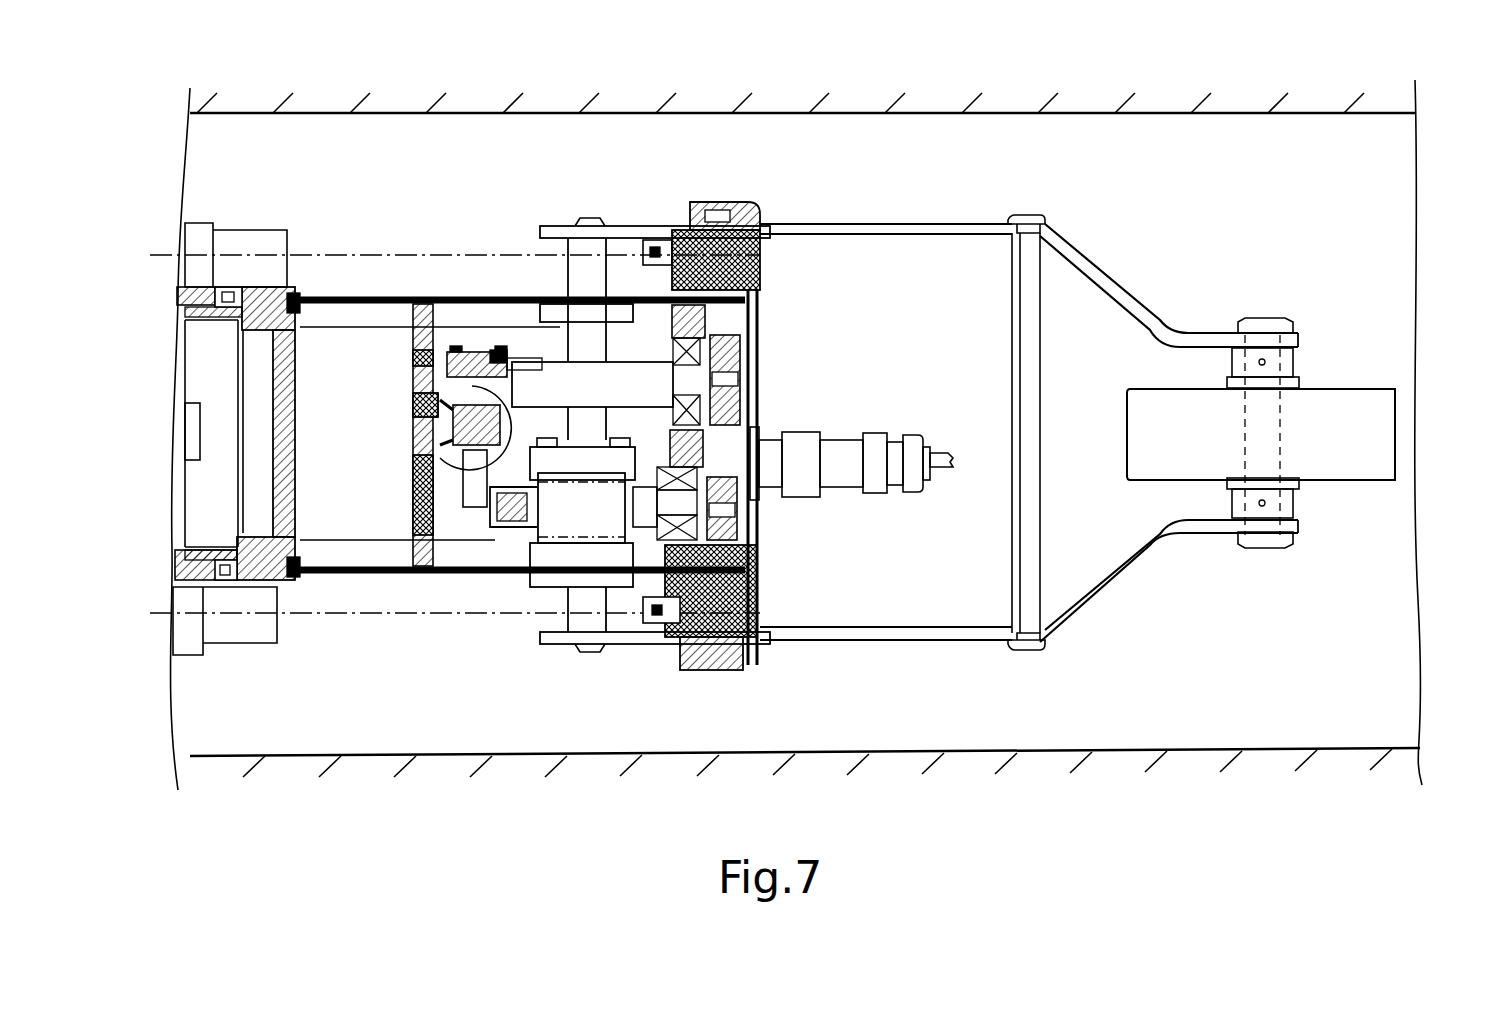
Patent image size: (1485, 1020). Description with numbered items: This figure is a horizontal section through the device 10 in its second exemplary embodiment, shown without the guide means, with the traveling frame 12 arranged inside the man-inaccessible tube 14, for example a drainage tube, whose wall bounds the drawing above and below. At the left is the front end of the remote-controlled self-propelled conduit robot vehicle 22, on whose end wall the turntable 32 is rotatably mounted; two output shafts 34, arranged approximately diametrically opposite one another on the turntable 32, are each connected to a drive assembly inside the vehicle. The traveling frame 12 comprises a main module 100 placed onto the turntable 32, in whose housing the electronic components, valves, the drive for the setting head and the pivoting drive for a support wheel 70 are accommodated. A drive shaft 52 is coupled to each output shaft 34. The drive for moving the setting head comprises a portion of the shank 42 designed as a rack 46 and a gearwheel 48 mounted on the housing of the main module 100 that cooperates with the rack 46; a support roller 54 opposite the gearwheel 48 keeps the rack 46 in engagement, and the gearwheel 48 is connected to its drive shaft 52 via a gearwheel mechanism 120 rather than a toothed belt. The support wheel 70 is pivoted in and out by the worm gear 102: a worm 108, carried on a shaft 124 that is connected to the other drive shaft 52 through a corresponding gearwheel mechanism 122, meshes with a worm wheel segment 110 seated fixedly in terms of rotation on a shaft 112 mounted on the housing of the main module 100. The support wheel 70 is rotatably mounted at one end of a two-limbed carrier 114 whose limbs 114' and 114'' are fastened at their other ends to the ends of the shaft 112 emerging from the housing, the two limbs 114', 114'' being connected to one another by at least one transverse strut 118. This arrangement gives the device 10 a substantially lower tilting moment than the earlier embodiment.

The device 10 is at (814, 182).
The traveling frame 12 is at (300, 590).
The tube 14 is at (1245, 100).
The conduit robot vehicle 22 is at (172, 208).
The turntable 32 is at (163, 660).
The output shafts 34 is at (265, 235).
The shank 42 is at (412, 407).
The rack 46 is at (452, 428).
The gearwheel 48 is at (470, 350).
The drive shaft 52 is at (377, 250).
The support roller 54 is at (412, 525).
The support wheel 70 is at (1368, 412).
The main module 100 is at (445, 590).
The worm gear 102 is at (528, 588).
The worm 108 is at (563, 523).
The worm wheel segment 110 is at (514, 560).
The shaft 112 is at (578, 272).
The carrier 114 is at (1169, 426).
The limb 114' is at (886, 184).
The limb 114'' is at (886, 663).
The transverse strut 118 is at (1016, 362).
The gearwheel mechanism 120 is at (774, 303).
The gearwheel mechanism 122 is at (770, 565).
The shaft 124 is at (633, 520).